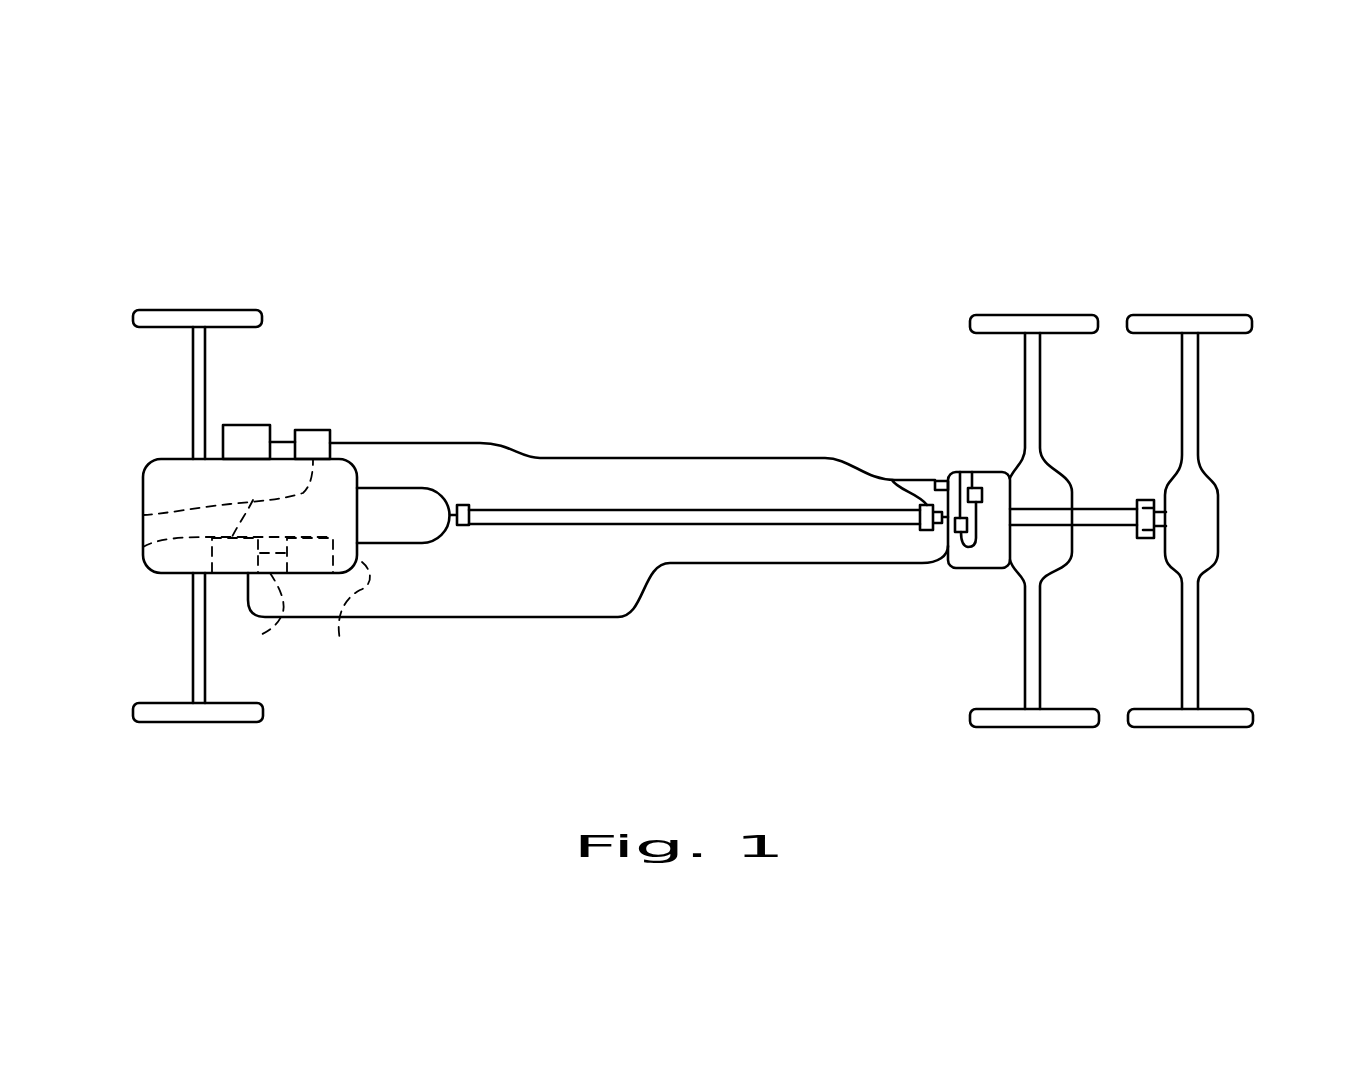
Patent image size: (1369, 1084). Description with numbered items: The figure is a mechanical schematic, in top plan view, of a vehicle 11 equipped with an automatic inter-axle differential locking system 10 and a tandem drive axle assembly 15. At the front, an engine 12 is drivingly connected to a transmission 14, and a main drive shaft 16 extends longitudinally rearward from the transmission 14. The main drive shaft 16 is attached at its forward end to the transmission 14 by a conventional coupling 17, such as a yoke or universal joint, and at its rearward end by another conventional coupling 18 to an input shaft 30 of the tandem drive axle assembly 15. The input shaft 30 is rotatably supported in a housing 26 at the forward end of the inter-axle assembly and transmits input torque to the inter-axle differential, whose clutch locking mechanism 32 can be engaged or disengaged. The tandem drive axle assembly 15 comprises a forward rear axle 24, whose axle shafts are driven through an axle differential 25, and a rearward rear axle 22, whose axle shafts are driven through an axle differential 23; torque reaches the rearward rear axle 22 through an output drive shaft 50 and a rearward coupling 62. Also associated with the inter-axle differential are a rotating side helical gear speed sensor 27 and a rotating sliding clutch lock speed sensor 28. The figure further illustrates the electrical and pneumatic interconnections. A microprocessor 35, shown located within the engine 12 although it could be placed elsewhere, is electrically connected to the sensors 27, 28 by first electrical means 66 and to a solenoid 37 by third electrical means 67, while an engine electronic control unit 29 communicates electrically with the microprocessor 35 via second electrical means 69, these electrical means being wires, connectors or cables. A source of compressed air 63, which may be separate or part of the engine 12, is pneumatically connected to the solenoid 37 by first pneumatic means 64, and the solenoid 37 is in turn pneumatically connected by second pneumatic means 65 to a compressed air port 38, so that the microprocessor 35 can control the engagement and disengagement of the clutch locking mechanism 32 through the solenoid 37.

The automatic inter-axle differential locking system 10 is at (1200, 242).
The vehicle 11 is at (728, 330).
The engine 12 is at (207, 490).
The transmission 14 is at (392, 489).
The tandem drive axle assembly 15 is at (1224, 521).
The main drive shaft 16 is at (585, 510).
The coupling 17 is at (467, 503).
The coupling 18 is at (926, 530).
The rearward rear axle 22 is at (1198, 635).
The axle differential 23 is at (1198, 540).
The forward rear axle 24 is at (1027, 655).
The axle differential 25 is at (946, 509).
The housing 26 is at (960, 568).
The rotating side helical gear speed sensor 27 is at (973, 472).
The rotating sliding clutch lock speed sensor 28 is at (960, 472).
The engine electronic control unit 29 is at (340, 640).
The input shaft 30 is at (892, 479).
The clutch locking mechanism 32 is at (909, 521).
The microprocessor 35 is at (153, 547).
The solenoid 37 is at (317, 430).
The compressed air port 38 is at (936, 480).
The output drive shaft 50 is at (1108, 500).
The rearward coupling 62 is at (1148, 540).
The source of compressed air 63 is at (252, 425).
The first pneumatic means 64 is at (281, 442).
The second pneumatic means 65 is at (690, 458).
The first electrical means 66 is at (477, 618).
The third electrical means 67 is at (143, 516).
The second electrical means 69 is at (258, 636).